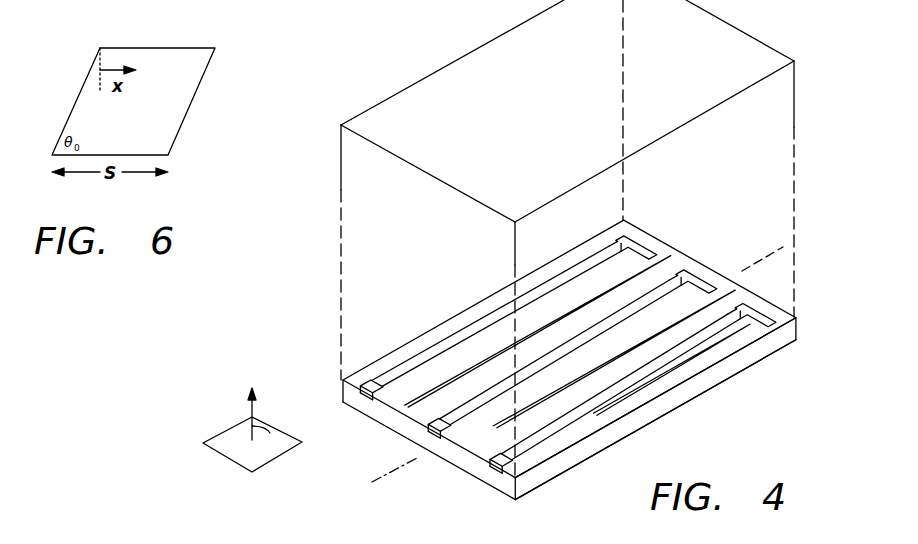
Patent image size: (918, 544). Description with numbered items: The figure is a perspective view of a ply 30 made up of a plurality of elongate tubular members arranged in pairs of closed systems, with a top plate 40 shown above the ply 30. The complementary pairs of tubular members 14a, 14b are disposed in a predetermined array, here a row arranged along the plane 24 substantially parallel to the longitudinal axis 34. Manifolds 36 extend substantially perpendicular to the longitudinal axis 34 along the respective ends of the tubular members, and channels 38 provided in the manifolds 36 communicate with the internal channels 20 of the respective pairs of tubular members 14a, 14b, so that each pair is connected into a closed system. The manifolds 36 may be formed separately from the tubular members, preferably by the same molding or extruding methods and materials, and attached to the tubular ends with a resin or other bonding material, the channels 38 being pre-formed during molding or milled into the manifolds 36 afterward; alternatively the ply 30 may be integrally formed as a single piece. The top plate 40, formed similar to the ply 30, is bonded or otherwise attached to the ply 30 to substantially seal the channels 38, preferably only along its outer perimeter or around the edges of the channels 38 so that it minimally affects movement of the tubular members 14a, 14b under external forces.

The top plate 40 is at (421, 80).
The longitudinal axis 34 is at (765, 260).
The ply 30 is at (777, 358).
The channels 38 is at (367, 395).
The manifolds 36 is at (528, 467).
The internal channels 20 is at (378, 383).
The tubular member 14b is at (437, 340).
The tubular member 14a is at (482, 352).
The plane 24 is at (271, 431).